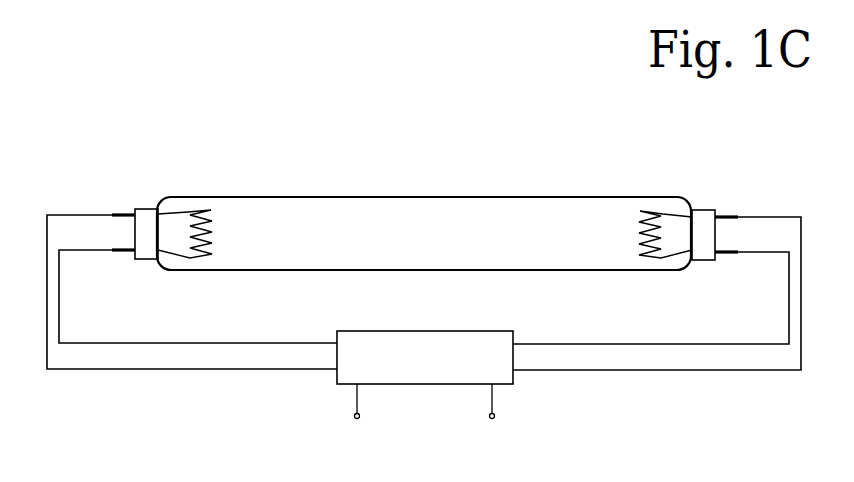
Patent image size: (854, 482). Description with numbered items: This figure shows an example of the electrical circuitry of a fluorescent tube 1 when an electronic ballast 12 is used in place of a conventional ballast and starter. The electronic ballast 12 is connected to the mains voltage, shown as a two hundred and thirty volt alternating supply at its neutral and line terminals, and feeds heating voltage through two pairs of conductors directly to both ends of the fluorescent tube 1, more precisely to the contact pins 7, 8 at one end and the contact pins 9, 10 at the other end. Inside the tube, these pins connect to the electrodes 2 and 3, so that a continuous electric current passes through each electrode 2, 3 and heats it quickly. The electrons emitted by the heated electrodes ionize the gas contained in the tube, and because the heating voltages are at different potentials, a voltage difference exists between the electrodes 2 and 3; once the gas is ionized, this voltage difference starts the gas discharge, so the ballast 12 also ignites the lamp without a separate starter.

The fluorescent tube 1 is at (530, 281).
The electrode 2 is at (185, 256).
The electrode 3 is at (658, 258).
The contact pin 7 is at (120, 213).
The contact pin 8 is at (120, 252).
The contact pin 9 is at (735, 216).
The contact pin 10 is at (735, 254).
The electronic ballast 12 is at (425, 331).